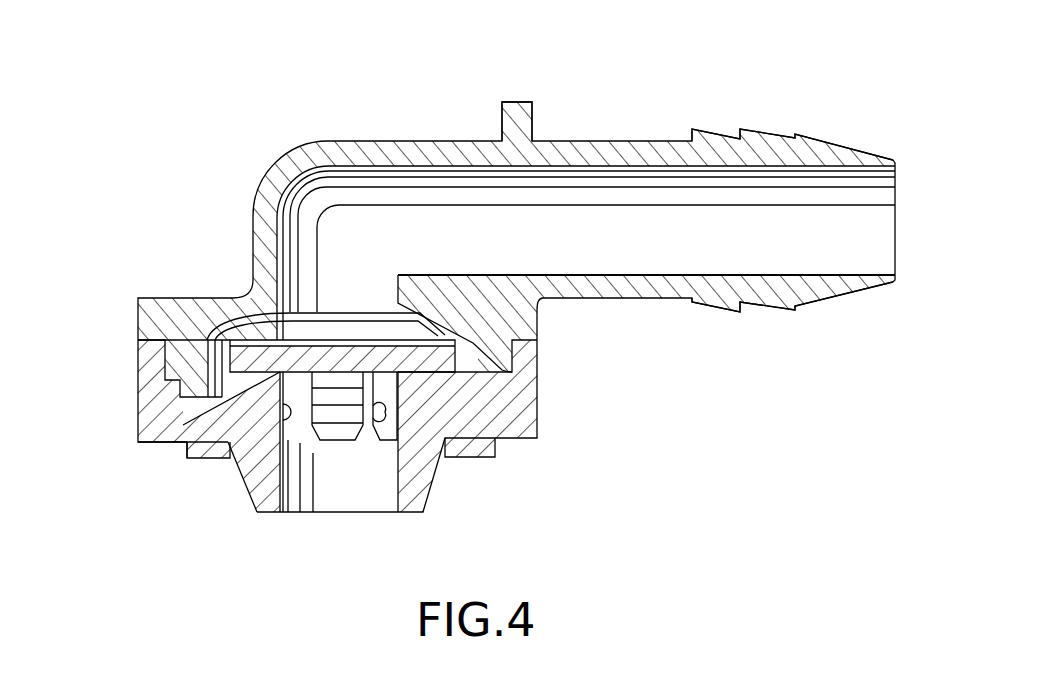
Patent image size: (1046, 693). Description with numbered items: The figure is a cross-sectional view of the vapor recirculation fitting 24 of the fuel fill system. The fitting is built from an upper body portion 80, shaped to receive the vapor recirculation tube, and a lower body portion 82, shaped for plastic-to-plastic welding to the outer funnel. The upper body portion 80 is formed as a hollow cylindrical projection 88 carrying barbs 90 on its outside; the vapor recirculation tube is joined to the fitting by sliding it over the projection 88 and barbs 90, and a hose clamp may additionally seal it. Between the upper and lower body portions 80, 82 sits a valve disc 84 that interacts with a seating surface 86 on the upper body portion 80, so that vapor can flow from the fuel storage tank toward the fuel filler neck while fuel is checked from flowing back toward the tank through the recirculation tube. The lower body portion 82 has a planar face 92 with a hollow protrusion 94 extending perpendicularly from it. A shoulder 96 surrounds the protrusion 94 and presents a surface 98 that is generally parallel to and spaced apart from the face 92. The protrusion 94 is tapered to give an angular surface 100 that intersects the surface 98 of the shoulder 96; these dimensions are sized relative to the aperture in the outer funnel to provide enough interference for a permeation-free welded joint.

The vapor recirculation fitting 24 is at (575, 98).
The upper body portion 80 is at (350, 133).
The lower body portion 82 is at (135, 420).
The valve disc 84 is at (362, 352).
The seating surface 86 is at (333, 312).
The hollow cylindrical projection 88 is at (590, 142).
The barbs 90 is at (692, 130).
The planar face 92 is at (160, 444).
The hollow protrusion 94 is at (267, 512).
The shoulder 96 is at (187, 452).
The surface 98 is at (210, 458).
The angular surface 100 is at (250, 483).